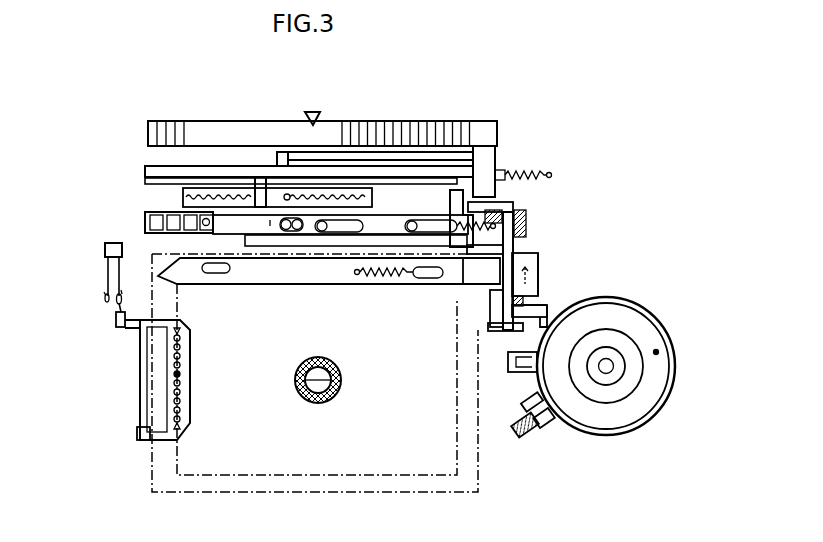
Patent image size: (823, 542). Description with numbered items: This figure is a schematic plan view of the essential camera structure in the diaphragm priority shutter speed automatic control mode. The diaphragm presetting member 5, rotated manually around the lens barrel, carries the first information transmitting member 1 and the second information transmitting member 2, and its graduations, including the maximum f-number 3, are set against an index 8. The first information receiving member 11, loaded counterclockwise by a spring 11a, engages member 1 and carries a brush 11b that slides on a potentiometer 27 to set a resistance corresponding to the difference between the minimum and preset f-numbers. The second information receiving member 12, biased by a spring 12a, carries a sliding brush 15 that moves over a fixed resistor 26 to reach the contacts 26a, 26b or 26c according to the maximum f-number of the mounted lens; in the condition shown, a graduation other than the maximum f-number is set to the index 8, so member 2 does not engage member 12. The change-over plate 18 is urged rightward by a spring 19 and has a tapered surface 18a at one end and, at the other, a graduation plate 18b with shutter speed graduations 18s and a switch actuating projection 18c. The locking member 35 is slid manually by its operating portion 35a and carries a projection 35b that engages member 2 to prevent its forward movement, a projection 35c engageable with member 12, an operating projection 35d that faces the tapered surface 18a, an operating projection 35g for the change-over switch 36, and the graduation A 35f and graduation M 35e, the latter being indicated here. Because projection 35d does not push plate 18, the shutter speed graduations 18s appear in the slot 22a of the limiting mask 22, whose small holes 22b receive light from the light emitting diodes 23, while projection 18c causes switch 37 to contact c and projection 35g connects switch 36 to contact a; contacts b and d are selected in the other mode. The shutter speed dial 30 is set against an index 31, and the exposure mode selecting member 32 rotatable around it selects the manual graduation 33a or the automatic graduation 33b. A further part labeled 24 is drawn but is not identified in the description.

The first information transmitting member 1 is at (290, 194).
The second information transmitting member 2 is at (478, 163).
The maximum f-number graduation 3 is at (320, 135).
The diaphragm presetting member 5 is at (414, 122).
The index 8 is at (311, 113).
The first information receiving member 11 is at (195, 167).
The spring 11a is at (520, 178).
The brush 11b is at (300, 182).
The second information receiving member 12 is at (455, 199).
The spring 12a is at (532, 242).
The sliding brush 15 is at (272, 228).
The change-over plate 18 is at (275, 275).
The tapered surface 18a is at (505, 270).
The graduation plate 18b is at (160, 327).
The switch actuating projection 18c is at (135, 330).
The shutter speed graduations 18s is at (152, 373).
The spring 19 is at (393, 275).
The limiting mask 22 is at (167, 480).
The graduation-transmissive slot 22a is at (152, 418).
The small hole 22b is at (181, 393).
The light emitting diodes 23 is at (181, 372).
The base plate 24 is at (317, 409).
The fixed resistor 26 is at (146, 215).
The contact 26a is at (192, 219).
The fixed contact 26b is at (173, 232).
The fixed contact 26c is at (152, 222).
The potentiometer 27 is at (297, 194).
The shutter speed dial 30 is at (644, 333).
The index 31 is at (508, 363).
The exposure mode selecting member 32 is at (521, 437).
The manual exposure control mode graduation 33a is at (527, 400).
The automatic exposure control mode graduation 33b is at (548, 428).
The locking member 35 is at (522, 246).
The operating portion 35a is at (540, 272).
The projection 35b is at (506, 204).
The projection 35c is at (482, 250).
The operating projection 35d is at (500, 292).
The diaphragm manual setting graduation 35e is at (570, 294).
The diaphragm automatic control graduation 35f is at (542, 258).
The operating projection 35g is at (510, 303).
The change-over switch 36 is at (618, 300).
The switch 37 is at (106, 246).
The contact a is at (524, 333).
The contact b is at (540, 297).
The contact c is at (122, 290).
The contact d is at (104, 292).